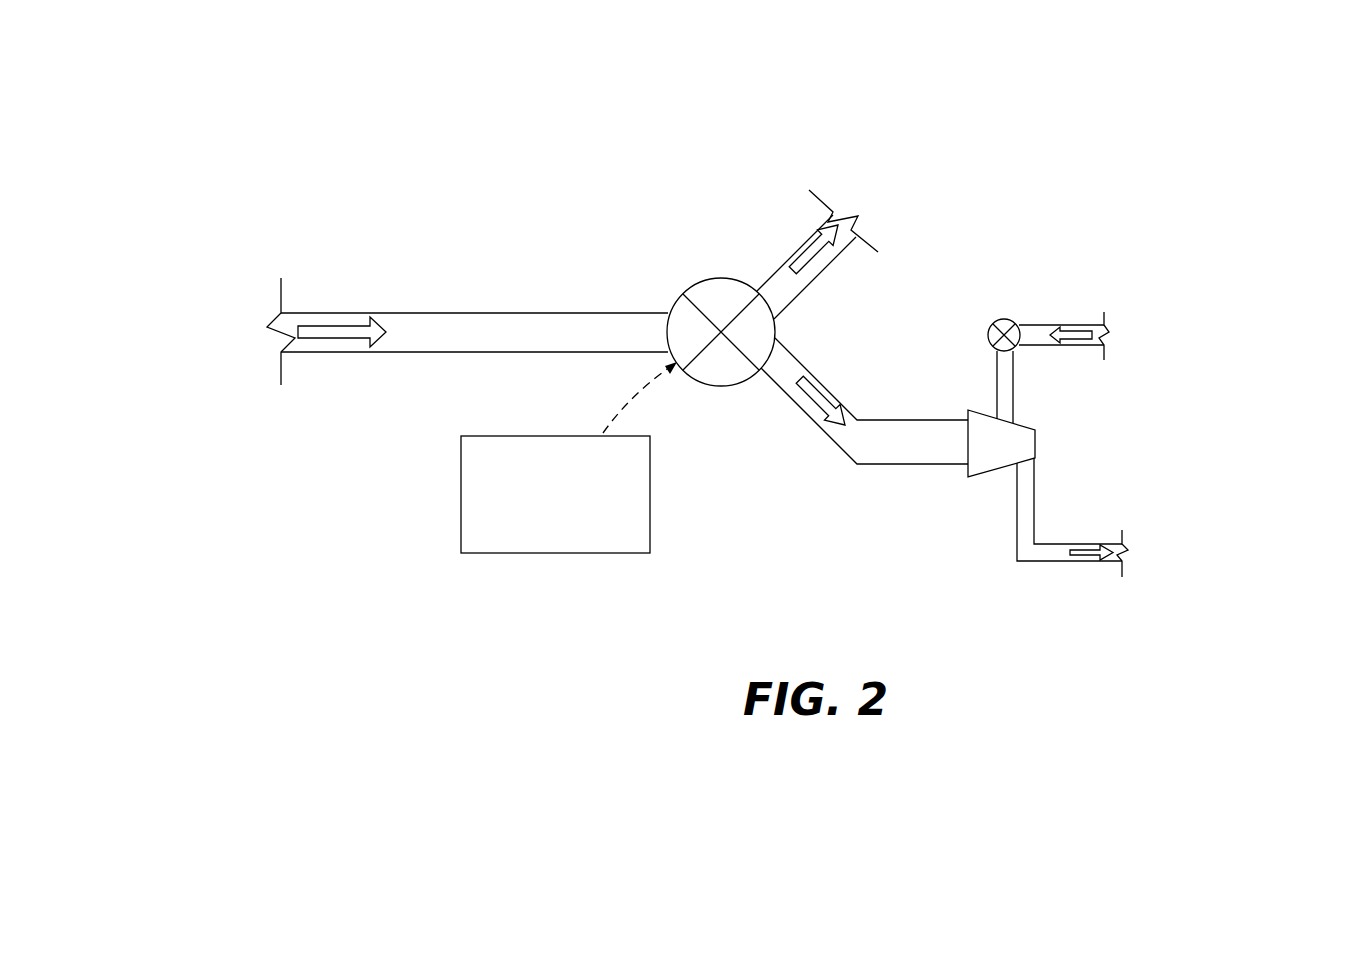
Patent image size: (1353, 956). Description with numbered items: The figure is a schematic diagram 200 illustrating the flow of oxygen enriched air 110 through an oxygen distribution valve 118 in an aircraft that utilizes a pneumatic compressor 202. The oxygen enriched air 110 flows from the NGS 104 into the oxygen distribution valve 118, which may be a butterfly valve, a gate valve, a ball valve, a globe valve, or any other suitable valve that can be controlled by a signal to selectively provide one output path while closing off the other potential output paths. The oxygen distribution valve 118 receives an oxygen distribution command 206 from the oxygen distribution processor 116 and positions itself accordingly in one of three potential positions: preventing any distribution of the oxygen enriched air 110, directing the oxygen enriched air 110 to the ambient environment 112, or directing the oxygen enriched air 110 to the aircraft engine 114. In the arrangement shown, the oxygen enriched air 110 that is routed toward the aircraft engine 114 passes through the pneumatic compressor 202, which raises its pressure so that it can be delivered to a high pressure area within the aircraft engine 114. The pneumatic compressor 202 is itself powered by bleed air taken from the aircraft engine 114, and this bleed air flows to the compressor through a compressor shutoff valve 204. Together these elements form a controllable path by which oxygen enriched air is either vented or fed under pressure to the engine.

The schematic diagram 200 is at (388, 70).
The NGS 104 is at (423, 331).
The oxygen enriched air 110 is at (360, 332).
The ambient environment 112 is at (848, 221).
The aircraft engine 114 is at (1118, 524).
The oxygen distribution processor 116 is at (468, 528).
The oxygen distribution valve 118 is at (708, 290).
The pneumatic compressor 202 is at (1020, 451).
The compressor shutoff valve 204 is at (1003, 325).
The oxygen distribution command 206 is at (627, 405).